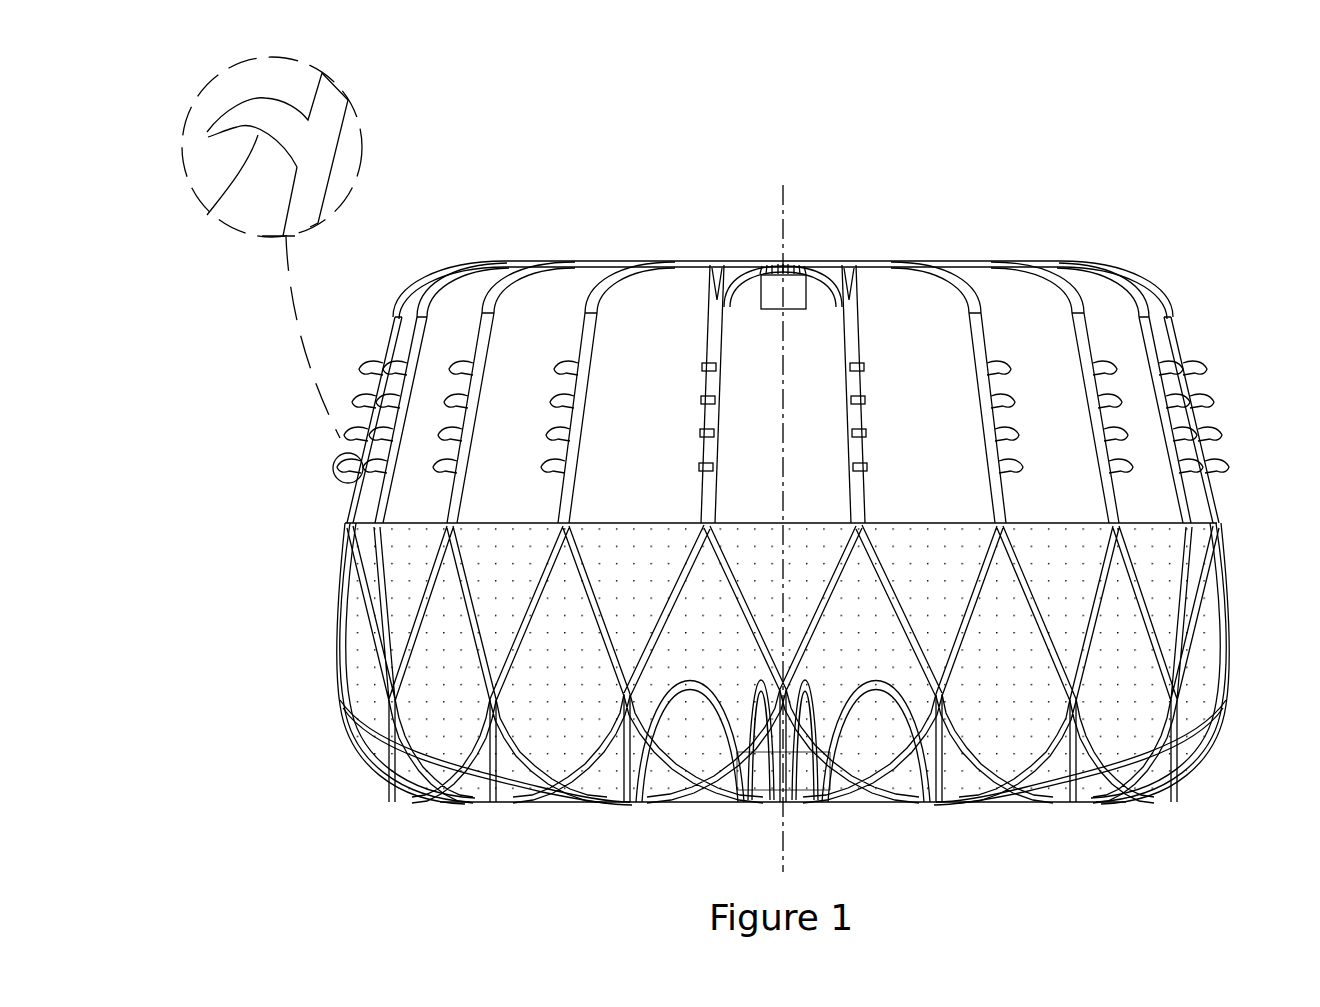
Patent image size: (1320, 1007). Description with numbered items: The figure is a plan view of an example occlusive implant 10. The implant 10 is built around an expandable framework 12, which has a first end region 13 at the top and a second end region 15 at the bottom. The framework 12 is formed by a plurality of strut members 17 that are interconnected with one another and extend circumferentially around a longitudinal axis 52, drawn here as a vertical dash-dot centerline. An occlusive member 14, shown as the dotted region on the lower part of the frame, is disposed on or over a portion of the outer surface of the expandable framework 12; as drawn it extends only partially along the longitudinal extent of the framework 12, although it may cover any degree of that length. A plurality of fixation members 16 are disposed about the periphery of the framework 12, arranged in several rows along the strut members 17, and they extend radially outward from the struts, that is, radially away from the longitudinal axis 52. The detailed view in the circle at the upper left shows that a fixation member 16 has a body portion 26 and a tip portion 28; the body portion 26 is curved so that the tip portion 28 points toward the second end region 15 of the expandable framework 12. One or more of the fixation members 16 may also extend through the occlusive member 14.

The occlusive implant 10 is at (1163, 210).
The expandable framework 12 is at (1200, 398).
The first end region 13 is at (398, 288).
The occlusive member 14 is at (1210, 545).
The second end region 15 is at (367, 773).
The fixation members 16 is at (258, 92).
The strut members 17 is at (473, 419).
The body portion 26 is at (217, 212).
The tip portion 28 is at (210, 138).
The longitudinal axis 52 is at (786, 200).